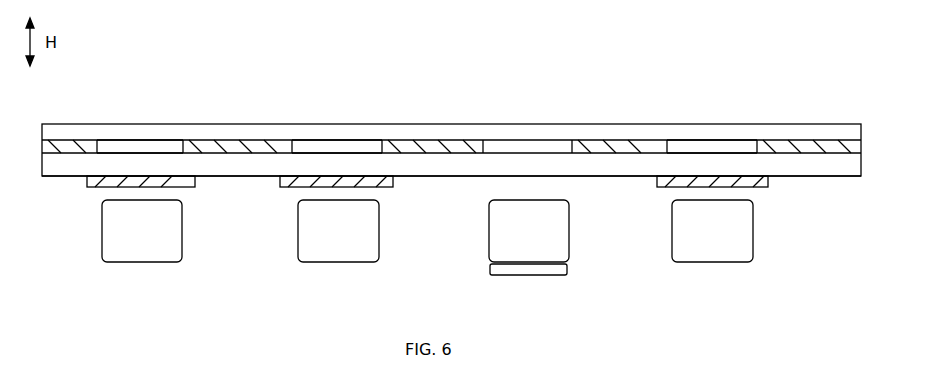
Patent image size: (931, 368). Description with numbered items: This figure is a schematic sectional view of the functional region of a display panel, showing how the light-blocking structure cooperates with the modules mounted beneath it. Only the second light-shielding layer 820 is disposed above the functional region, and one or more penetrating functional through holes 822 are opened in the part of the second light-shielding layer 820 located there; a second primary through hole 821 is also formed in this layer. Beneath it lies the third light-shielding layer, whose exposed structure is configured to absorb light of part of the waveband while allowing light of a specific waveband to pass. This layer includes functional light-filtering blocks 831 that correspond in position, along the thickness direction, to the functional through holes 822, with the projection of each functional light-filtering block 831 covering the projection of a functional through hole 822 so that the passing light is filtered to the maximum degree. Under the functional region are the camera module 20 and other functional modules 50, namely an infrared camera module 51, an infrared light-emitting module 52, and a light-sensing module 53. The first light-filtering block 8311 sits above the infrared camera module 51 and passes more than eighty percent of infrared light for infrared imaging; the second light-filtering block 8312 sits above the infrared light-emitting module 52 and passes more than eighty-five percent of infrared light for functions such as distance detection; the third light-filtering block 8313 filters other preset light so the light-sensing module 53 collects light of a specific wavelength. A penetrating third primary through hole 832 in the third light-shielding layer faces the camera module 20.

The camera module 20 is at (527, 242).
The functional modules 50 is at (432, 264).
The infrared camera module 51 is at (157, 242).
The infrared light-emitting module 52 is at (334, 230).
The light-sensing module 53 is at (712, 233).
The second light-shielding layer 820 is at (627, 128).
The second primary through hole 821 is at (523, 145).
The functional through hole 822 is at (172, 145).
The functional light-filtering block 831 is at (426, 137).
The first light-filtering block 8311 is at (127, 183).
The second light-filtering block 8312 is at (338, 183).
The third light-filtering block 8313 is at (713, 183).
The third primary through hole 832 is at (563, 182).